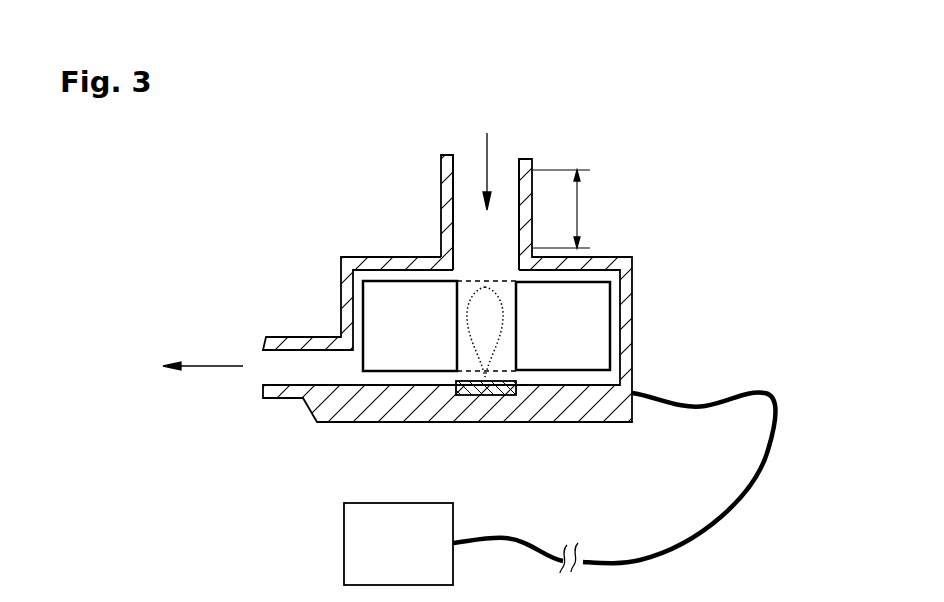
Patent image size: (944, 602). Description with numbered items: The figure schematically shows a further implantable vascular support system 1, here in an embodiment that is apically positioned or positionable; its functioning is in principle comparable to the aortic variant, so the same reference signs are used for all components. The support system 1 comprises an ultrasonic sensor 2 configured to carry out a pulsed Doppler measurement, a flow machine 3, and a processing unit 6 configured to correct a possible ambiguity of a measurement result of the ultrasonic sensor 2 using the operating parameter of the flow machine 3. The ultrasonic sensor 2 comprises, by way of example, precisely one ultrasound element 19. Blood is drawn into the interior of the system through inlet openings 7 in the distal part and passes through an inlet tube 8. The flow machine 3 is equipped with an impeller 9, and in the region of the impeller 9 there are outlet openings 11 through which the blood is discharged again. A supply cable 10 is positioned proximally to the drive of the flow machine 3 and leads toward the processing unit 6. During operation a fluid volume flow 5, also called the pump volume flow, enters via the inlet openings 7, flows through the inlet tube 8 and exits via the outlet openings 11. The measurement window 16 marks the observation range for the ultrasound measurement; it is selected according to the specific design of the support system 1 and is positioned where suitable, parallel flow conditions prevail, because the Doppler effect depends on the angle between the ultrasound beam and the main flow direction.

The implantable vascular support system 1 is at (765, 198).
The ultrasonic sensor 2 is at (500, 397).
The flow machine 3 is at (523, 329).
The fluid volume flow 5 is at (487, 133).
The processing unit 6 is at (357, 548).
The inlet openings 7 is at (463, 222).
The inlet tube 8 is at (453, 176).
The impeller 9 is at (600, 298).
The supply cable 10 is at (757, 392).
The outlet openings 11 is at (358, 257).
The measurement window 16 is at (577, 210).
The ultrasound element 19 is at (473, 394).